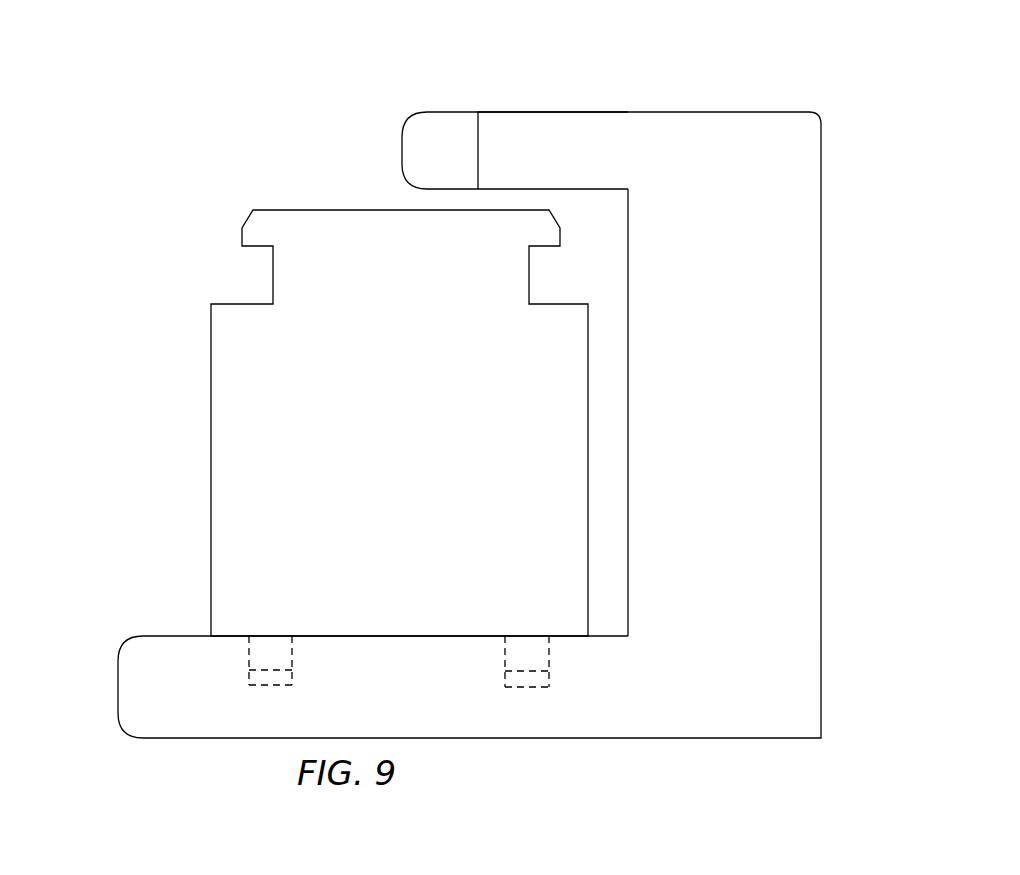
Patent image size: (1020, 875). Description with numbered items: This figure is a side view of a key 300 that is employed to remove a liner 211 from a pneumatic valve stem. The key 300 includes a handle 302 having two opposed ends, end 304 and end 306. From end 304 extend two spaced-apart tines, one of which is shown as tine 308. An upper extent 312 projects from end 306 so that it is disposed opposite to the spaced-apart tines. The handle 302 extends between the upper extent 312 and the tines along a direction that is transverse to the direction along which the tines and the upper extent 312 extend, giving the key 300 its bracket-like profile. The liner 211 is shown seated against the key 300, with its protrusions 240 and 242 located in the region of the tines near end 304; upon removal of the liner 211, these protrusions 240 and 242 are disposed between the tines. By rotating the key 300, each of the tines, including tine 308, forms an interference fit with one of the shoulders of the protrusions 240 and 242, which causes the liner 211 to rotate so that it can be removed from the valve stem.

The key 300 is at (788, 56).
The handle 302 is at (792, 393).
The end 304 is at (818, 700).
The end 306 is at (818, 116).
The tine 308 is at (135, 687).
The upper extent 312 is at (515, 130).
The liner 211 is at (170, 447).
The protrusion 240 is at (247, 660).
The protrusion 242 is at (553, 665).